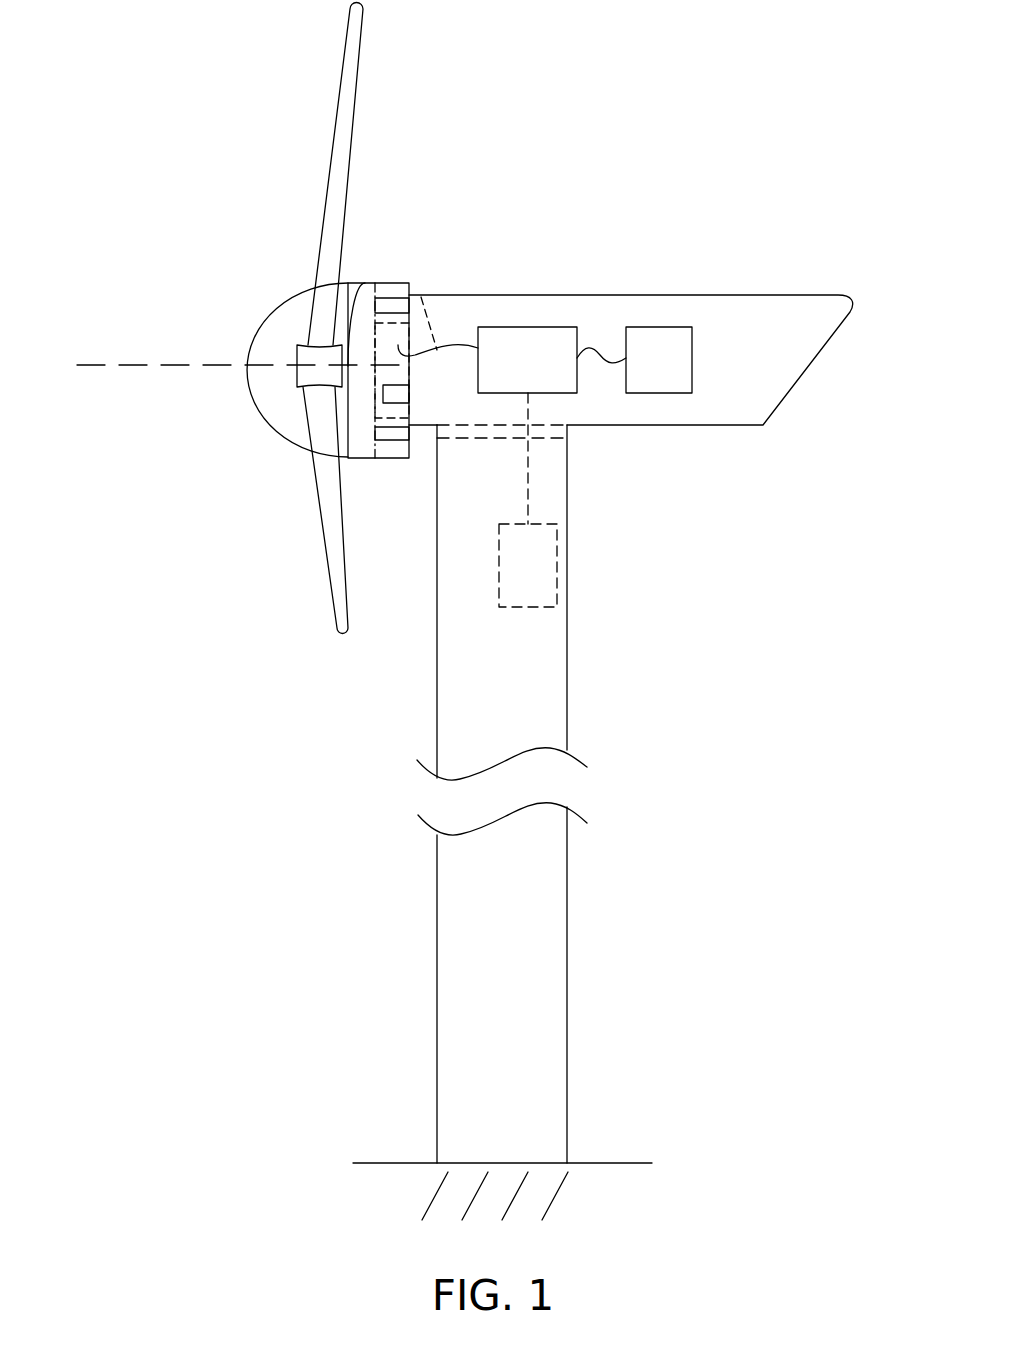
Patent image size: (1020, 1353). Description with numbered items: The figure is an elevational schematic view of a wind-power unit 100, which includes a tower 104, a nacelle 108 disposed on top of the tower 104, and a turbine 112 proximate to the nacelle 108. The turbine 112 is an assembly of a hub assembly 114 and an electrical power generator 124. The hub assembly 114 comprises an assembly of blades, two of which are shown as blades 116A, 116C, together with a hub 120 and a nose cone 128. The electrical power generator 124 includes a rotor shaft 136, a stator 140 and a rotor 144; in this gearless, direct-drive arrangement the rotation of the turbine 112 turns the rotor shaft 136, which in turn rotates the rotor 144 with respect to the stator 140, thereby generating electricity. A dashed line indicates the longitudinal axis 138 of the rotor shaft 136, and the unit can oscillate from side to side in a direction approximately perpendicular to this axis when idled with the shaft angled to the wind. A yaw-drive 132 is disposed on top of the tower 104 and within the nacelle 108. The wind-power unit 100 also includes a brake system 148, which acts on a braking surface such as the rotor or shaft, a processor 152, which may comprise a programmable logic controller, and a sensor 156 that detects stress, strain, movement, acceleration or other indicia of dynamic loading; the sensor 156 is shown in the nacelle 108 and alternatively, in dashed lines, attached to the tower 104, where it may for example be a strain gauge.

The wind-power unit 100 is at (266, 770).
The tower 104 is at (437, 673).
The nacelle 108 is at (773, 412).
The turbine 112 is at (376, 250).
The hub assembly 114 is at (265, 318).
The blade 116A is at (318, 507).
The blade 116C is at (325, 207).
The hub 120 is at (295, 376).
The electrical power generator 124 is at (392, 472).
The nose cone 128 is at (263, 333).
The yaw-drive 132 is at (567, 437).
The rotor shaft 136 is at (365, 283).
The longitudinal axis 138 is at (102, 365).
The stator 140 is at (376, 308).
The rotor 144 is at (407, 335).
The brake system 148 is at (400, 390).
The processor 152 is at (533, 327).
The sensor 156 is at (658, 327).